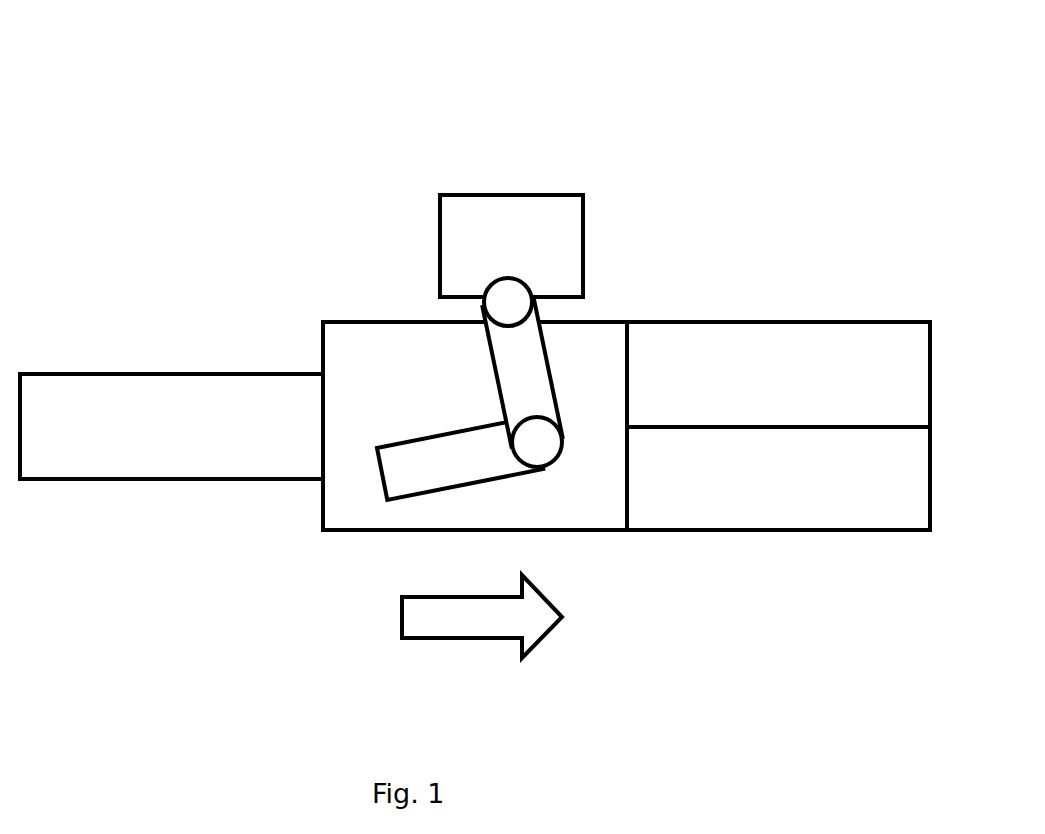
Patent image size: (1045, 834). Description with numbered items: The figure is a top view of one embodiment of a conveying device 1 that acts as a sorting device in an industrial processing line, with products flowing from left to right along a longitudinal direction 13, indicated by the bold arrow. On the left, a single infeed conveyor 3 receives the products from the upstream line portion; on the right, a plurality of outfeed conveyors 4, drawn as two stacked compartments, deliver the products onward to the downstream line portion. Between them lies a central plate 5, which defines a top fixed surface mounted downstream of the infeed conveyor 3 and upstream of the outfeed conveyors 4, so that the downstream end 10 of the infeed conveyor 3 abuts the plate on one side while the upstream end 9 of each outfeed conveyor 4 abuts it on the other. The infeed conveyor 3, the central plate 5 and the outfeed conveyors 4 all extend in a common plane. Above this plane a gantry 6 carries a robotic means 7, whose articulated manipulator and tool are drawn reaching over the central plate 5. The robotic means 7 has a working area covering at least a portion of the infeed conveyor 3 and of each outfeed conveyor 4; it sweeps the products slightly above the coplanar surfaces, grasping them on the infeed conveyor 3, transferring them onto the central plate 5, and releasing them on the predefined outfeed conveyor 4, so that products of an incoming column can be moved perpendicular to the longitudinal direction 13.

The conveying device 1 is at (275, 101).
The infeed conveyor 3 is at (147, 456).
The outfeed conveyor 4 is at (817, 349).
The central plate 5 is at (420, 516).
The gantry 6 is at (557, 218).
The robotic means 7 is at (498, 461).
The upstream end of the outfeed conveyor 9 is at (671, 509).
The downstream end of the infeed conveyor 10 is at (302, 390).
The longitudinal direction 13 is at (487, 625).